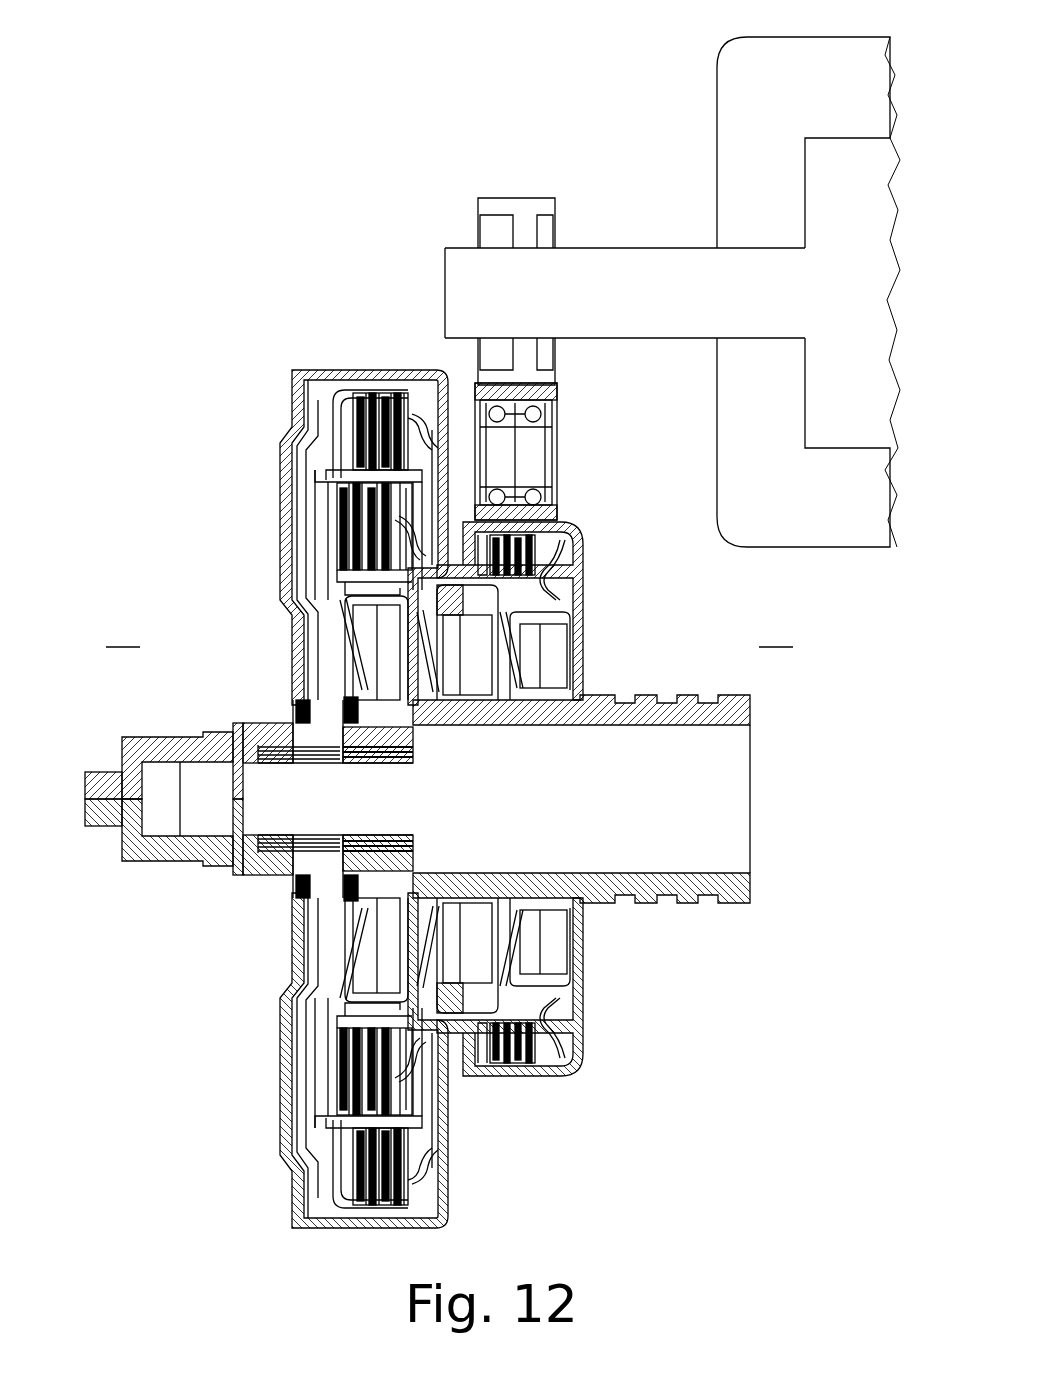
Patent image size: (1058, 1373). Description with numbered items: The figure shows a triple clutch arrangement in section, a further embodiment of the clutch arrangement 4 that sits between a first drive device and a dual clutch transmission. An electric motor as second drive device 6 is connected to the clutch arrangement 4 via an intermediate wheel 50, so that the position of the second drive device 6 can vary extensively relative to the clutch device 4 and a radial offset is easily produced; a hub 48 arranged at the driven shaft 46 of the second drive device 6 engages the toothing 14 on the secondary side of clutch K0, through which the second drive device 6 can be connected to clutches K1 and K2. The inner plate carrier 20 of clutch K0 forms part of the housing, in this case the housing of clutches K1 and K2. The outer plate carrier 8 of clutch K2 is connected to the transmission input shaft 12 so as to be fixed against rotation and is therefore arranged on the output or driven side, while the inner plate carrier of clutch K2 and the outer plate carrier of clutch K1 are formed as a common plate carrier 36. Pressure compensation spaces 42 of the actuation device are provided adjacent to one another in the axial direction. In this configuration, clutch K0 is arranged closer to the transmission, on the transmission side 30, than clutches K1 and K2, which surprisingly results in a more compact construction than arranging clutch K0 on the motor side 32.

The clutch arrangement 4 is at (241, 377).
The second drive device 6 is at (702, 46).
The outer plate carrier of clutch K2 8 is at (338, 400).
The transmission input shaft 12 is at (265, 752).
The toothing 14 is at (556, 537).
The inner plate carrier of clutch K0 20 is at (345, 372).
The transmission side 30 is at (777, 631).
The motor side 32 is at (124, 631).
The common plate carrier 36 is at (421, 430).
The pressure compensation spaces 42 is at (522, 660).
The driven shaft 46 is at (628, 273).
The hub 48 is at (522, 205).
The intermediate wheel 50 is at (560, 418).
The clutch K0 is at (577, 553).
The clutch K1 is at (326, 521).
The clutch K2 is at (336, 426).